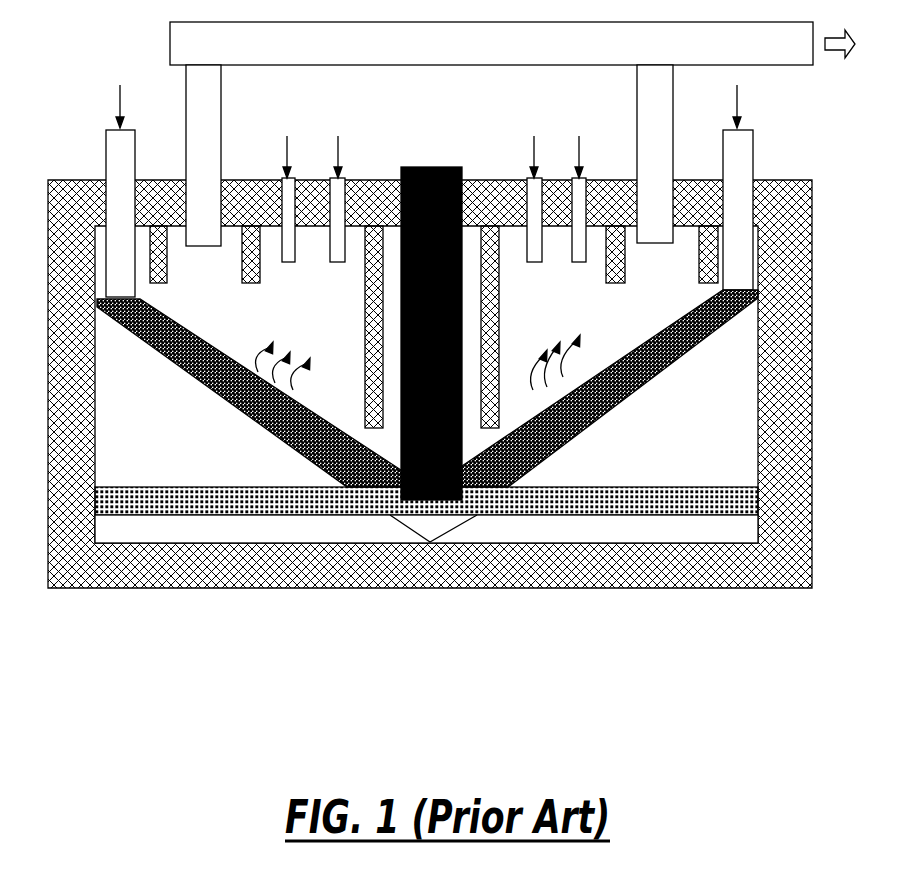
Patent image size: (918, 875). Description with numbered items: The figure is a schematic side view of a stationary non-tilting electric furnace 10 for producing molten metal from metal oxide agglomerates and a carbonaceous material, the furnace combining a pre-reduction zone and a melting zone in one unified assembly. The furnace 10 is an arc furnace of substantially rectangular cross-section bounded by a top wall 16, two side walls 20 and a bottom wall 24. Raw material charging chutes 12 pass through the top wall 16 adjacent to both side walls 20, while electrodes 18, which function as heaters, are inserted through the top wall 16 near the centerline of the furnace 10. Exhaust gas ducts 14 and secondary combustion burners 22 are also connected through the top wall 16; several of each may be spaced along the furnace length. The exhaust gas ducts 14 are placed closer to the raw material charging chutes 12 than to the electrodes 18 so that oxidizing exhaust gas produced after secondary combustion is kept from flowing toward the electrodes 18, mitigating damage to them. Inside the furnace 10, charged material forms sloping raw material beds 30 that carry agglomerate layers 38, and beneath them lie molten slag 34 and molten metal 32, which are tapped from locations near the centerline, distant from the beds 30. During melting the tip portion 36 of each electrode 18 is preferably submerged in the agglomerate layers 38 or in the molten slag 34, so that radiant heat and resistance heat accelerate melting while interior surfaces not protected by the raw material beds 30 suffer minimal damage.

The furnace 10 is at (454, 336).
The raw material charging chutes 12 is at (135, 150).
The exhaust gas ducts 14 is at (222, 123).
The top wall 16 is at (62, 180).
The electrodes 18 is at (436, 162).
The side walls 20 is at (42, 232).
The secondary combustion burners 22 is at (295, 188).
The bottom wall 24 is at (722, 588).
The raw material beds 30 is at (122, 452).
The molten metal 32 is at (733, 528).
The molten slag 34 is at (720, 498).
The tip portion 36 is at (432, 517).
The agglomerate layers 38 is at (253, 420).